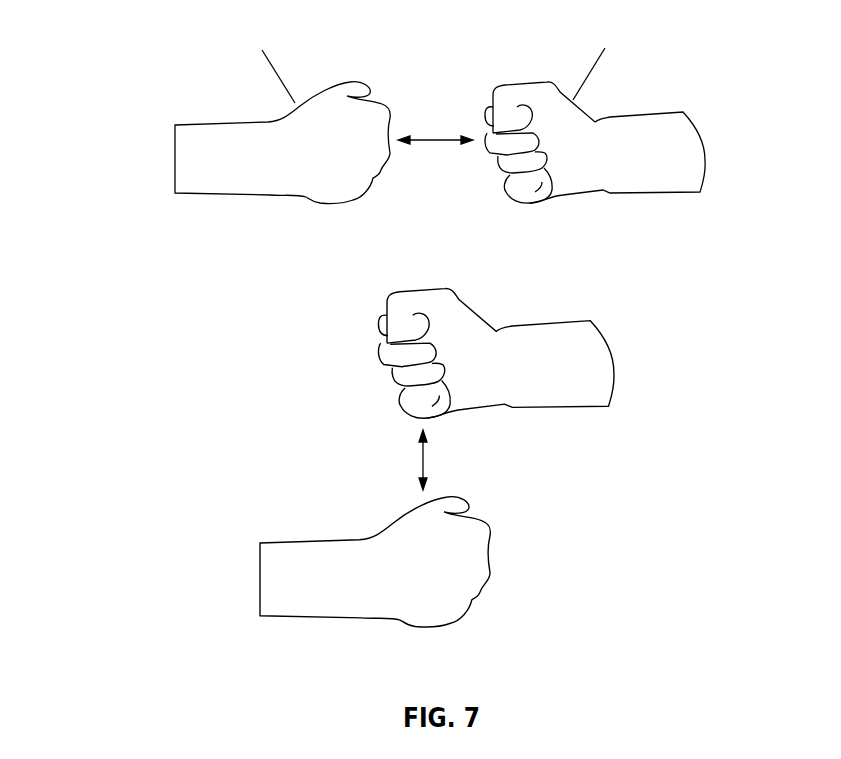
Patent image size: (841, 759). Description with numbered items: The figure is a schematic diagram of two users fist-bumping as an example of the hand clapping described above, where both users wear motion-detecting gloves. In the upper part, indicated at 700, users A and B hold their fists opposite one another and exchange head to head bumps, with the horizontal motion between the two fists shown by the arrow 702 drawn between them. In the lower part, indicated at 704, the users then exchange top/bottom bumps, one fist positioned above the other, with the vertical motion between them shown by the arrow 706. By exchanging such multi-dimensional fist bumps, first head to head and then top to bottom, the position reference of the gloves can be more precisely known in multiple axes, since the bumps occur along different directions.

The head to head bumps 700 is at (137, 85).
The arrow 702 is at (437, 141).
The top/bottom bumps 704 is at (225, 355).
The arrow 706 is at (423, 458).